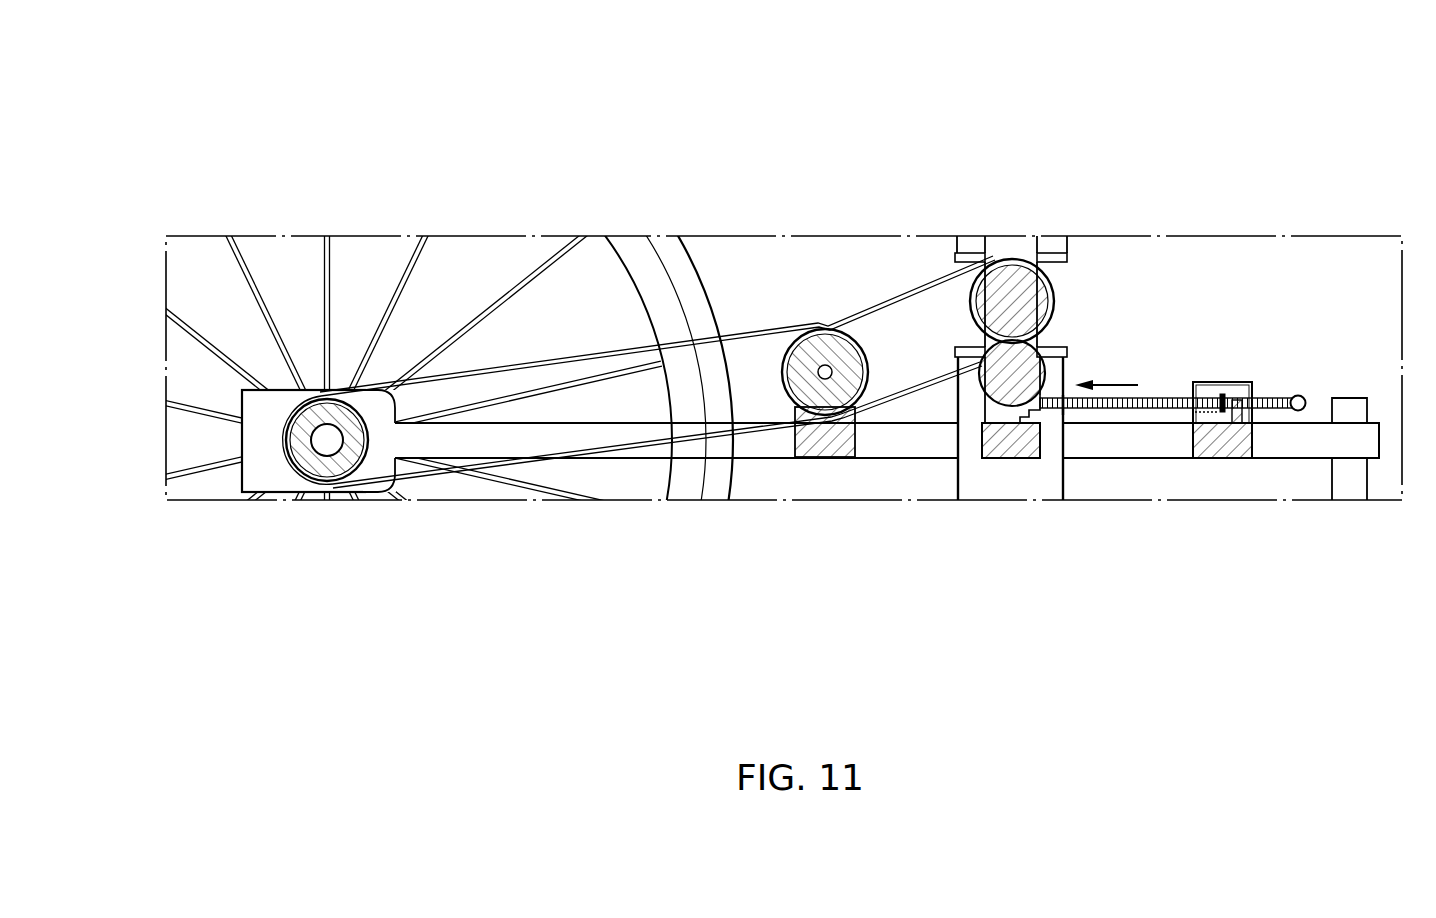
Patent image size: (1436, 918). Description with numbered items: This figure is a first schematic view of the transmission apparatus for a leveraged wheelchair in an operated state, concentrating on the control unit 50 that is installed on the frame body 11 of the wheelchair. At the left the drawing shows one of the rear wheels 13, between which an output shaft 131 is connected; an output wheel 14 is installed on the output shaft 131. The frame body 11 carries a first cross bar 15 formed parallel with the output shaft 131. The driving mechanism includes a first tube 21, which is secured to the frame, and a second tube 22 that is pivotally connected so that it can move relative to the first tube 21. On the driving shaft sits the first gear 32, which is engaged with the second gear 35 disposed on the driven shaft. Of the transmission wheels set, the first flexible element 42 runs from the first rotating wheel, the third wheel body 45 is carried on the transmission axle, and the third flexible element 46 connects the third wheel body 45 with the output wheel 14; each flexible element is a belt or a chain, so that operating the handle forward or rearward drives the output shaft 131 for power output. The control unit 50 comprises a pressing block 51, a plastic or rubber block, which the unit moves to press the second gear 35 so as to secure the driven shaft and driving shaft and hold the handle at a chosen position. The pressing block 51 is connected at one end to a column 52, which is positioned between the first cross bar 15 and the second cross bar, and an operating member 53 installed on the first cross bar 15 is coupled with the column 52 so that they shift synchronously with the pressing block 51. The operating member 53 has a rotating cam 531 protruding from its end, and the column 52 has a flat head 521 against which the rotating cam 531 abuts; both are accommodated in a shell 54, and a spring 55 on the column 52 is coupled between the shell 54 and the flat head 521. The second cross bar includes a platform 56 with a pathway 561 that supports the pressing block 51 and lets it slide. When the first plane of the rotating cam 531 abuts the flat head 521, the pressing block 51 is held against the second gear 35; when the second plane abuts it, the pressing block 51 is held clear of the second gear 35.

The frame body 11 is at (775, 445).
The rear wheels 13 is at (687, 259).
The output shaft 131 is at (295, 472).
The output wheel 14 is at (333, 463).
The first cross bar 15 is at (1208, 462).
The first tube 21 is at (1062, 372).
The second tube 22 is at (1060, 250).
The first gear 32 is at (1007, 288).
The second gear 35 is at (990, 383).
The first flexible element 42 is at (895, 303).
The third wheel body 45 is at (808, 334).
The third flexible element 46 is at (607, 445).
The control unit 50 is at (1245, 416).
The pressing block 51 is at (1063, 410).
The column 52 is at (1117, 408).
The flat head 521 is at (1213, 382).
The operating member 53 is at (1290, 400).
The rotating cam 531 is at (1235, 385).
The shell 54 is at (1193, 392).
The spring 55 is at (1197, 385).
The platform 56 is at (998, 430).
The pathway 561 is at (1023, 427).